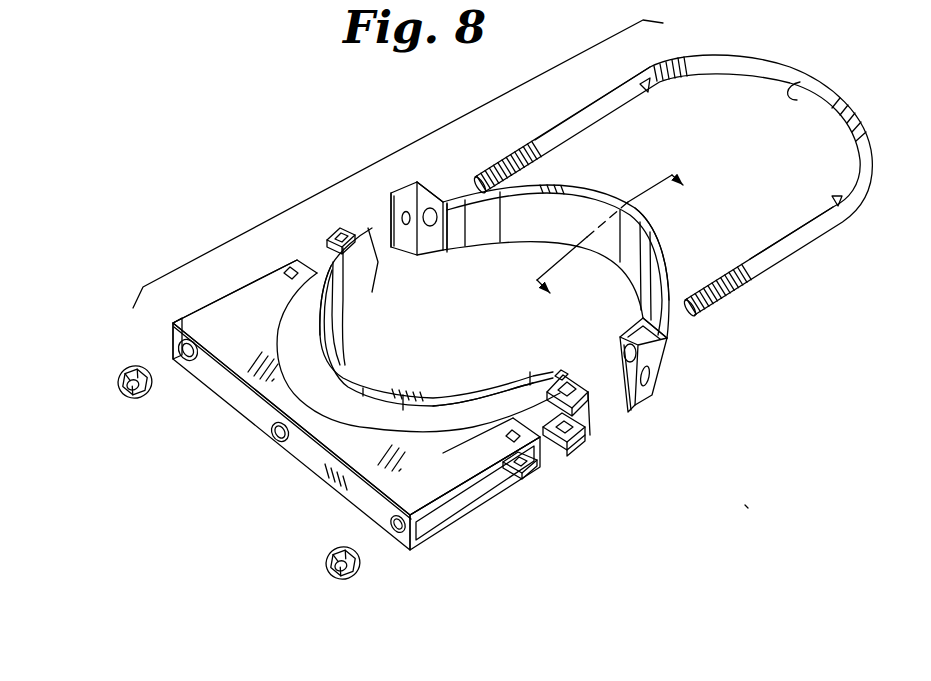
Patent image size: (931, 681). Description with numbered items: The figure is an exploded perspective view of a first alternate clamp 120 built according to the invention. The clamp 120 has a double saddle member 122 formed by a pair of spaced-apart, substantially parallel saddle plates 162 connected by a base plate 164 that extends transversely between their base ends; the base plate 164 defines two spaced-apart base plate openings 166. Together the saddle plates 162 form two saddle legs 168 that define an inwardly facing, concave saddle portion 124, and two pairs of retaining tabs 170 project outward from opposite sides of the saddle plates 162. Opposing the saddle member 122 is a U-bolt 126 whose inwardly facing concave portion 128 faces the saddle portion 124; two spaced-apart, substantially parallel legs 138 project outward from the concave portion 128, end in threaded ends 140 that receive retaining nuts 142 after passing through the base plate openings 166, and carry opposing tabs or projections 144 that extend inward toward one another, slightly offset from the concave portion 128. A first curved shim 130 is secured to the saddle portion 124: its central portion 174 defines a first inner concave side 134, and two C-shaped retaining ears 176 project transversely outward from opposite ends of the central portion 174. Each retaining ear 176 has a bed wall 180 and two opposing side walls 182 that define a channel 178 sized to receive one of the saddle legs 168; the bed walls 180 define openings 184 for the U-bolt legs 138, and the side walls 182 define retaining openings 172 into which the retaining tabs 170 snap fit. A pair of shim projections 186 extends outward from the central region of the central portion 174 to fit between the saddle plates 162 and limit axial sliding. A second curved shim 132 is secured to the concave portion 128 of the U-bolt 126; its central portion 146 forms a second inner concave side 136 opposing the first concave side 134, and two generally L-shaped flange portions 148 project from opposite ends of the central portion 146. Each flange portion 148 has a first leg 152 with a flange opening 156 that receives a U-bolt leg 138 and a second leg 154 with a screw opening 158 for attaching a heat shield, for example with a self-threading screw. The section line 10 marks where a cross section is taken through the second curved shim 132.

The section line 10- 10 is at (616, 244).
The first alternate clamp 120 is at (745, 505).
The double saddle member 122 is at (465, 525).
The saddle portion 124 is at (270, 440).
The U-bolt 126 is at (735, 52).
The concave portion 128 is at (800, 82).
The first curved shim 130 is at (368, 370).
The second curved shim 132 is at (662, 247).
The first inner concave side 134 is at (352, 290).
The second inner concave side 136 is at (552, 230).
The legs 138 is at (577, 95).
The threaded ends 140 is at (518, 135).
The retaining nuts 142 is at (120, 392).
The tabs or projections 144 is at (647, 90).
The central portion 146 is at (545, 187).
The flange portions 148 is at (418, 178).
The first leg 152 is at (438, 192).
The second leg 154 is at (392, 230).
The flange opening 156 is at (450, 235).
The screw opening 158 is at (405, 240).
The saddle plates 162 is at (505, 505).
The base plate 164 is at (316, 468).
The base plate openings 166 is at (178, 346).
The saddle legs 168 is at (240, 284).
The retaining tabs 170 is at (291, 268).
The retaining openings 172 is at (357, 232).
The central portion 174 is at (450, 388).
The retaining ears 176 is at (328, 228).
The channel 178 is at (605, 458).
The bed wall 180 is at (596, 428).
The side walls 182 is at (570, 392).
The openings 184 is at (592, 447).
The shim projections 186 is at (350, 386).